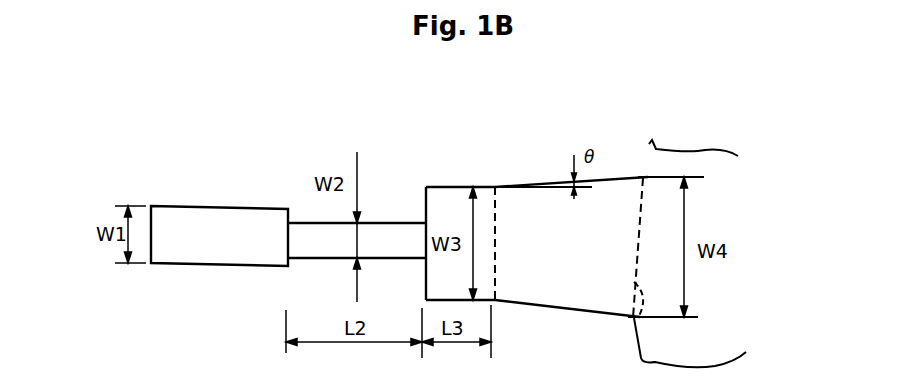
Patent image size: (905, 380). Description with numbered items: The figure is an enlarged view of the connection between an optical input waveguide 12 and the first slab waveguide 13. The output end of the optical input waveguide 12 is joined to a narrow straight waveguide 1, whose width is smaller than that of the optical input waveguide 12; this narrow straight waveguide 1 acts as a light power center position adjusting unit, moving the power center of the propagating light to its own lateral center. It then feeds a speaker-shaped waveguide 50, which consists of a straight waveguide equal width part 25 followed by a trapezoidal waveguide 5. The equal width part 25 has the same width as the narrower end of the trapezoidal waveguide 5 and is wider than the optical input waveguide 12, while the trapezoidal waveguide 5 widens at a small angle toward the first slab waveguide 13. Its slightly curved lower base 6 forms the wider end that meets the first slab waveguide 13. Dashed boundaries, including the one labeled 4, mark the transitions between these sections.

The optical input waveguide 12 is at (220, 226).
The narrow straight waveguide 1 is at (399, 238).
The straight waveguide equal width part 25 is at (458, 203).
The boundary 4 is at (496, 232).
The trapezoidal waveguide 5 is at (613, 200).
The first slab waveguide 13 is at (645, 166).
The lower base 6 is at (637, 323).
The speaker-shaped waveguide 50 is at (557, 294).